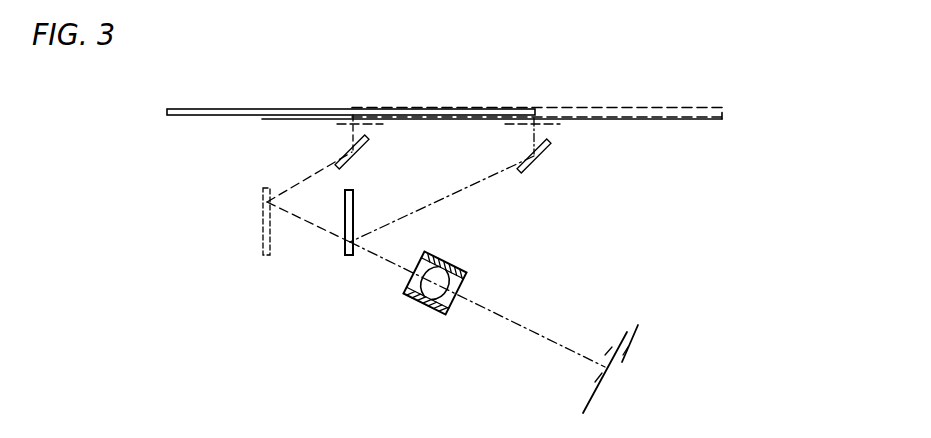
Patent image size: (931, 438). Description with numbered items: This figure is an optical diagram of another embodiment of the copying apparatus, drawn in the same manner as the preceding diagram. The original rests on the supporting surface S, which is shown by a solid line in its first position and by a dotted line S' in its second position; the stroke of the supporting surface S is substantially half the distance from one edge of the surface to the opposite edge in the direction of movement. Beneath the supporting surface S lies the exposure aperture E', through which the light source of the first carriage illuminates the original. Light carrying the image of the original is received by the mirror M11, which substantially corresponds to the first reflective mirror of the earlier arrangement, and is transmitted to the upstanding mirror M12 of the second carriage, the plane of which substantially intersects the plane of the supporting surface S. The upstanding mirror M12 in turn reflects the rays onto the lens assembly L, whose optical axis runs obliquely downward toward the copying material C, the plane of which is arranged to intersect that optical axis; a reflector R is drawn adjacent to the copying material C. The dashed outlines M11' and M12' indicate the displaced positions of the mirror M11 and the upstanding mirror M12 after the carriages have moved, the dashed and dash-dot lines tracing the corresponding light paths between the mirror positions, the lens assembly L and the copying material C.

The supporting surface S is at (444, 97).
The second position of supporting surface S' is at (537, 98).
The exposure aperture position E' is at (422, 141).
The mirror M11 is at (471, 180).
The mirror in second position M11' is at (341, 158).
The upstanding mirror M12 is at (339, 244).
The upstanding mirror in second position M12' is at (282, 244).
The lens assembly L is at (416, 302).
The reflector / image receiving member R is at (607, 357).
The copying material C is at (596, 397).